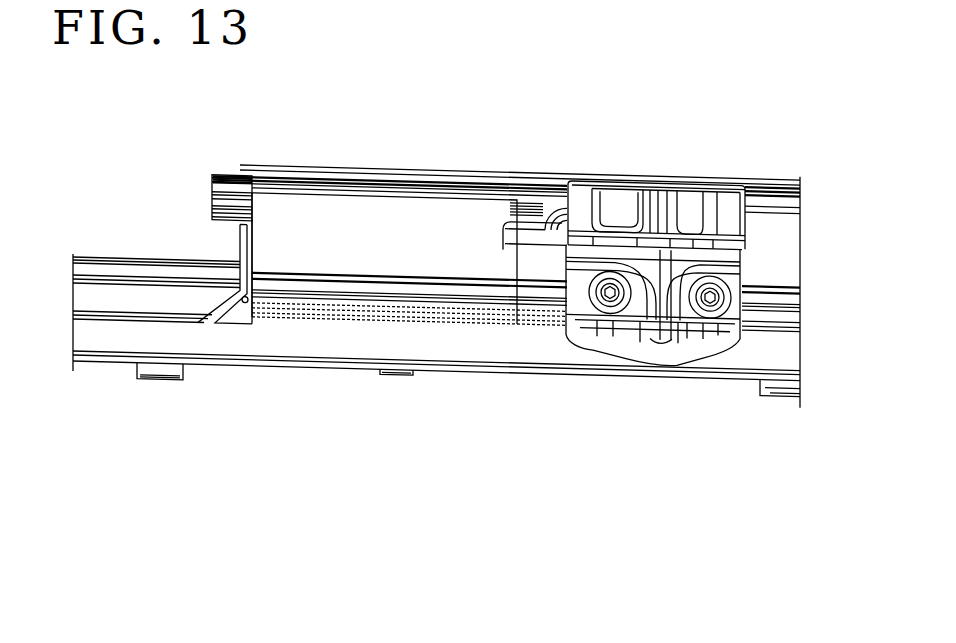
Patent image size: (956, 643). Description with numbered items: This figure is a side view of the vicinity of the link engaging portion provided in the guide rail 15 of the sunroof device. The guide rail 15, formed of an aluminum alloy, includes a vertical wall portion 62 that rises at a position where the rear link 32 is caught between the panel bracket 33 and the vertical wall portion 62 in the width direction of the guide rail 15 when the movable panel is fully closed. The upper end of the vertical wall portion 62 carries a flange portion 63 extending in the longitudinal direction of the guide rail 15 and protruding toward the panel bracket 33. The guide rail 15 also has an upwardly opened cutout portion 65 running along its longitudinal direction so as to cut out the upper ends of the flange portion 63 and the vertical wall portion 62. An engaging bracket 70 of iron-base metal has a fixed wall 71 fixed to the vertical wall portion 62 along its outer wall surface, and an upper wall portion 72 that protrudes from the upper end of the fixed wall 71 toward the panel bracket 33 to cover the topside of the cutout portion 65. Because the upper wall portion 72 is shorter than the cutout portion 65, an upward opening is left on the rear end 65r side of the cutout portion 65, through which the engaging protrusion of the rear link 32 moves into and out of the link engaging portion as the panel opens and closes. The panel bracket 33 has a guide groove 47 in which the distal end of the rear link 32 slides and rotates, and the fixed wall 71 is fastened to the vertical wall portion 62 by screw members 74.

The guide rail 15 is at (242, 366).
The panel bracket 33 is at (250, 163).
The guide groove 47 is at (214, 196).
The vertical wall portion 62 is at (262, 247).
The flange portion 63 is at (378, 192).
The cutout portion 65 is at (504, 224).
The rear end of the cutout portion 65r is at (522, 198).
The rear link 32 is at (548, 197).
The upper wall portion 72 is at (632, 180).
The fixed wall 71 is at (730, 278).
The engaging bracket 70 is at (705, 362).
The screw member 74 is at (694, 340).